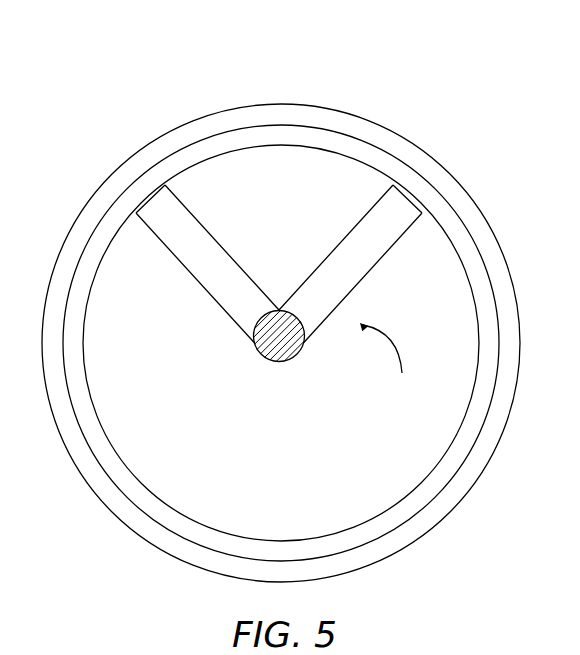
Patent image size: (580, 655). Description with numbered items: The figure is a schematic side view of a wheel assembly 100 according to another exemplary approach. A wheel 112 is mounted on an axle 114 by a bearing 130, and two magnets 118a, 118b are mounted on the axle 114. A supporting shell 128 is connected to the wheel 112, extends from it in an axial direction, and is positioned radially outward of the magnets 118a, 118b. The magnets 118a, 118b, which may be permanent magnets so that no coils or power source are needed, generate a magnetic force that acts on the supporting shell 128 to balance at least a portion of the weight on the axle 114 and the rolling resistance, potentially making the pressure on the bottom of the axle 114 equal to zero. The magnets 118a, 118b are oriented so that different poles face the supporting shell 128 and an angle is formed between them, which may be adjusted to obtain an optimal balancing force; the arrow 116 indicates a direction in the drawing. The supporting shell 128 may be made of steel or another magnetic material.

The wheel assembly 100 is at (311, 304).
The wheel 112 is at (256, 122).
The axle 114 is at (278, 362).
The rotation direction 116 is at (391, 363).
The magnet 118a is at (183, 274).
The magnet 118b is at (330, 258).
The supporting shell 128 is at (485, 338).
The bearing 130 is at (331, 343).